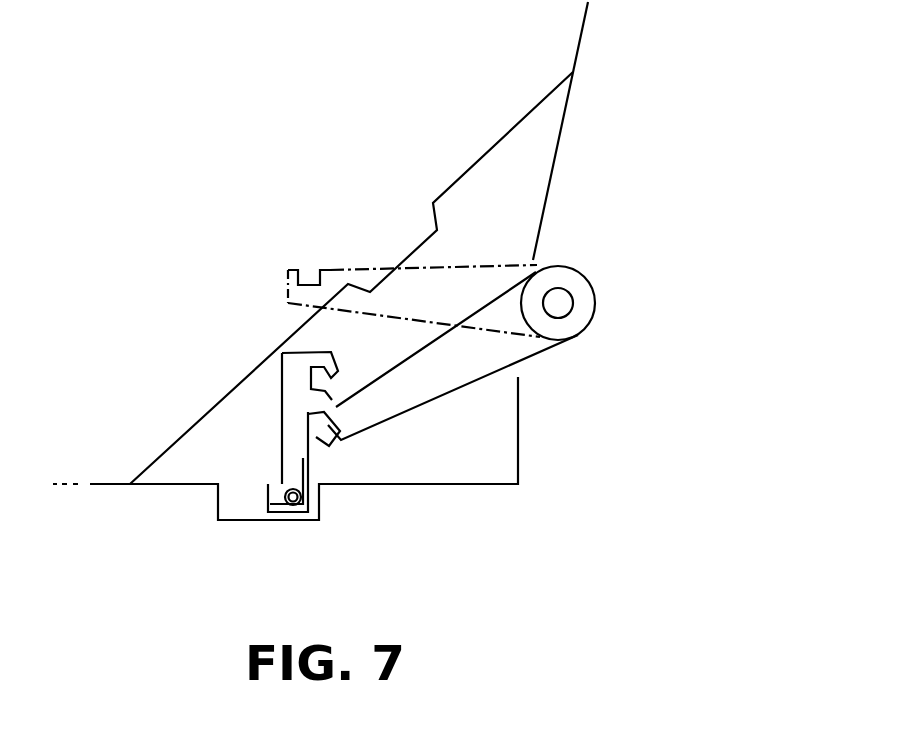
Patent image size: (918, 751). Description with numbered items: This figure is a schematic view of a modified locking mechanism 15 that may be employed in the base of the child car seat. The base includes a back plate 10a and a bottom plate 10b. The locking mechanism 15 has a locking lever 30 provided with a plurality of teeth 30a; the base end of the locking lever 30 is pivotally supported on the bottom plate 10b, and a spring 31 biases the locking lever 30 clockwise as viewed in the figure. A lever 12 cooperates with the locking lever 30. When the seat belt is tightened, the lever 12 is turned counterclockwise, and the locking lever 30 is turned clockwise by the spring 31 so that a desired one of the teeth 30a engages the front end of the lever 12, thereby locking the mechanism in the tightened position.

The back plate 10a is at (579, 43).
The bottom plate 10b is at (427, 484).
The lever 12 is at (472, 366).
The locking mechanism 15 is at (224, 393).
The locking lever 30 is at (282, 438).
The teeth 30a is at (322, 402).
The spring 31 is at (277, 508).